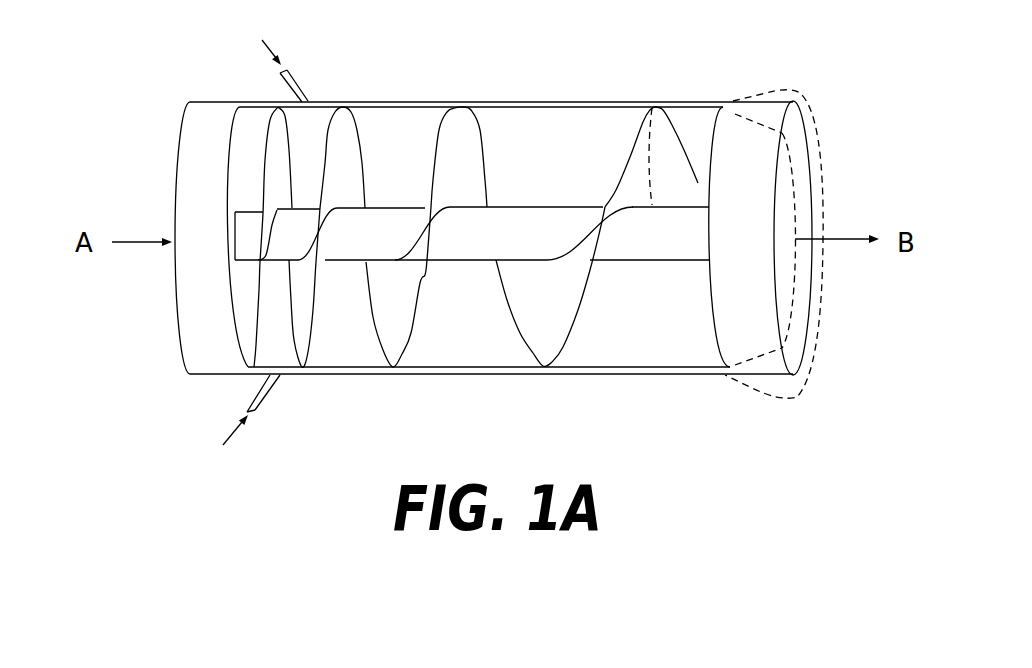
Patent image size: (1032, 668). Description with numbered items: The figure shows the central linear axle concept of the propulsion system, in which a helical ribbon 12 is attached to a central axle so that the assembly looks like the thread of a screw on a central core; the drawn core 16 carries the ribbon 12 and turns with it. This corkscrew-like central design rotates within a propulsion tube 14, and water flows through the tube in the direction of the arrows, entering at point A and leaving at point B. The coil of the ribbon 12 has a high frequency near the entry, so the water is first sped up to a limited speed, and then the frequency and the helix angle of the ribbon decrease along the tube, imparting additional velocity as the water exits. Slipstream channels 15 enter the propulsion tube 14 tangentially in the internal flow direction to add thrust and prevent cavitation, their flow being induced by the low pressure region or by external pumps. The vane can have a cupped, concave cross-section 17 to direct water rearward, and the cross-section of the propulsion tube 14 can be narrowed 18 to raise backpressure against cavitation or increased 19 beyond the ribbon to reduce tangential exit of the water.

The ribbon 12 is at (357, 125).
The propulsion tube 14 is at (587, 102).
The slipstream channels 15 is at (327, 68).
The shaft 16 is at (655, 263).
The cupped, concave cross-section of the vane 17 is at (656, 127).
The narrowed cross-section of the propulsion tube 18 is at (735, 114).
The increased cross-section of the propulsion tube 19 is at (770, 95).